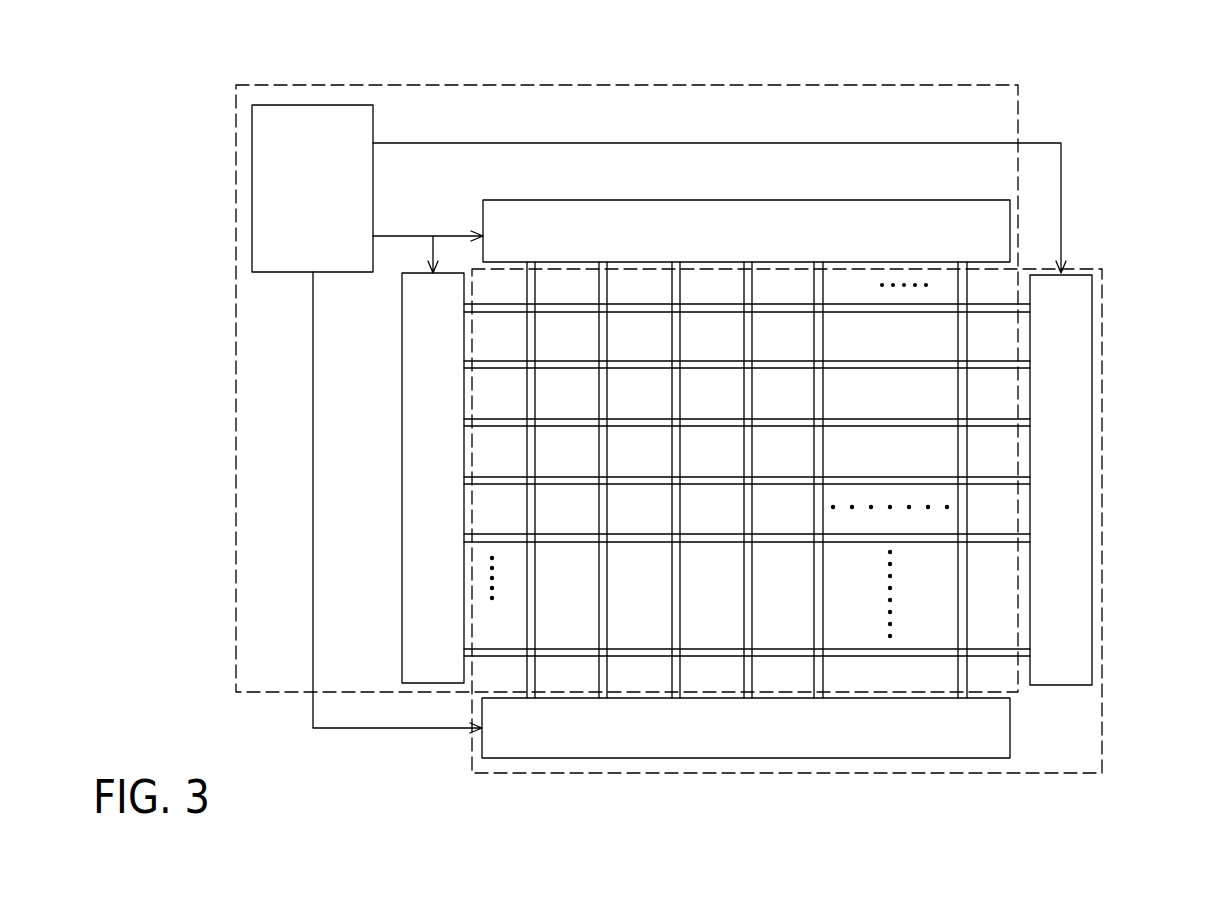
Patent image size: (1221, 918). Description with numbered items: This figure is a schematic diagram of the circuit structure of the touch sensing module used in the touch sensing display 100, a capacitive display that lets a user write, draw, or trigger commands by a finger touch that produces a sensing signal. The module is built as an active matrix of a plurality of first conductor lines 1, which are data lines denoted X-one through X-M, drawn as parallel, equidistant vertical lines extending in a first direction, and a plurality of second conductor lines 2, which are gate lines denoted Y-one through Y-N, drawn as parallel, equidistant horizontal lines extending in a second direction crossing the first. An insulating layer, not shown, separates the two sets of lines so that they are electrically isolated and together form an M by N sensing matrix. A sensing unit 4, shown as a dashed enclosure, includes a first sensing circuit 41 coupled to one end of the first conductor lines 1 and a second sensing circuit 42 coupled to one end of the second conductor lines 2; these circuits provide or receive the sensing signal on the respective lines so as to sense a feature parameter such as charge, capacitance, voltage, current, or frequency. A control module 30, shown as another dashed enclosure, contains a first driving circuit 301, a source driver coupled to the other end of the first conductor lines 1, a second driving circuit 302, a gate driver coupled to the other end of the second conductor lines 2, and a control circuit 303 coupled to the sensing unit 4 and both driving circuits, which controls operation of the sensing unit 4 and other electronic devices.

The touch sensing display 100 is at (1118, 103).
The control module 30 is at (663, 85).
The control circuit 303 is at (313, 104).
The first driving circuit 301 is at (843, 200).
The second driving circuit 302 is at (402, 607).
The first conductor lines 1 is at (531, 275).
The second conductor lines 2 is at (480, 365).
The sensing unit 4 is at (880, 773).
The first sensing circuit 41 is at (745, 760).
The second sensing circuit 42 is at (1058, 687).